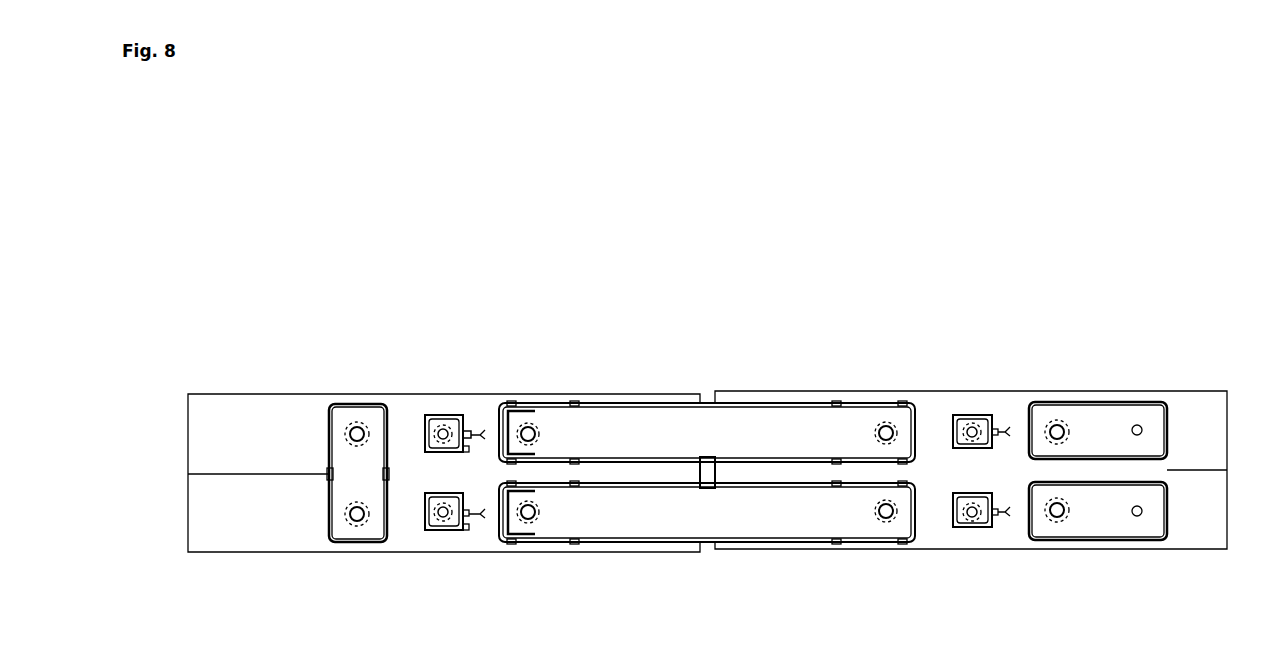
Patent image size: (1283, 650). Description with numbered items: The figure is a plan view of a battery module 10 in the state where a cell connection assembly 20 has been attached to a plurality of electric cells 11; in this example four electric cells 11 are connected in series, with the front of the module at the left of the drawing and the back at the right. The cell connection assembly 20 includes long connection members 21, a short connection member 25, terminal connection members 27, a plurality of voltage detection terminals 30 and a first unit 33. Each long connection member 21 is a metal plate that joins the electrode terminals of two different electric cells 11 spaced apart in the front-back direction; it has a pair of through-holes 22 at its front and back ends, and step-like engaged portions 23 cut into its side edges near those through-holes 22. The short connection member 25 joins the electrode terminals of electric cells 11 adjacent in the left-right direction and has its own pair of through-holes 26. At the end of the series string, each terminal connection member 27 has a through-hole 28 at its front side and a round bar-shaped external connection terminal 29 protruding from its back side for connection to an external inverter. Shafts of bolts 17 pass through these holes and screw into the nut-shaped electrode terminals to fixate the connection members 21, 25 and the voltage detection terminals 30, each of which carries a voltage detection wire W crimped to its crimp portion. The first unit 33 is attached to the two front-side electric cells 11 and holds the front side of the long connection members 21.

The battery module 10 is at (860, 295).
The electric cell 11 is at (178, 422).
The bolt 17 is at (352, 427).
The cell connection assembly 20 is at (968, 312).
The long connection member 21 is at (803, 432).
The through-hole 22 is at (528, 426).
The engaged portion 23 is at (528, 520).
The short connection member 25 is at (372, 418).
The through-hole 26 is at (357, 521).
The terminal connection member 27 is at (1120, 415).
The through-hole 28 is at (1061, 517).
The external connection terminal 29 is at (1142, 428).
The voltage detection terminal 30 is at (430, 416).
The first unit 33 is at (470, 428).
The voltage detection wire W is at (482, 431).